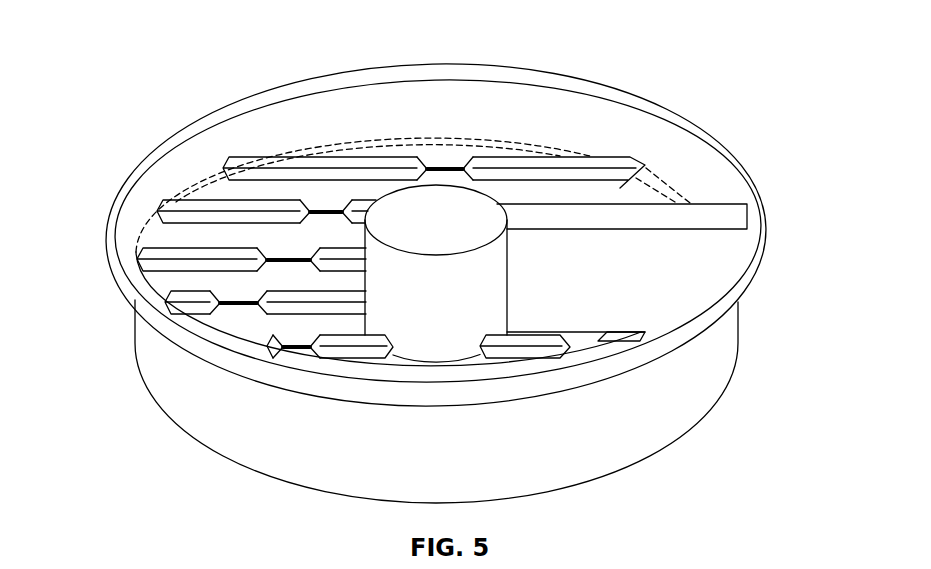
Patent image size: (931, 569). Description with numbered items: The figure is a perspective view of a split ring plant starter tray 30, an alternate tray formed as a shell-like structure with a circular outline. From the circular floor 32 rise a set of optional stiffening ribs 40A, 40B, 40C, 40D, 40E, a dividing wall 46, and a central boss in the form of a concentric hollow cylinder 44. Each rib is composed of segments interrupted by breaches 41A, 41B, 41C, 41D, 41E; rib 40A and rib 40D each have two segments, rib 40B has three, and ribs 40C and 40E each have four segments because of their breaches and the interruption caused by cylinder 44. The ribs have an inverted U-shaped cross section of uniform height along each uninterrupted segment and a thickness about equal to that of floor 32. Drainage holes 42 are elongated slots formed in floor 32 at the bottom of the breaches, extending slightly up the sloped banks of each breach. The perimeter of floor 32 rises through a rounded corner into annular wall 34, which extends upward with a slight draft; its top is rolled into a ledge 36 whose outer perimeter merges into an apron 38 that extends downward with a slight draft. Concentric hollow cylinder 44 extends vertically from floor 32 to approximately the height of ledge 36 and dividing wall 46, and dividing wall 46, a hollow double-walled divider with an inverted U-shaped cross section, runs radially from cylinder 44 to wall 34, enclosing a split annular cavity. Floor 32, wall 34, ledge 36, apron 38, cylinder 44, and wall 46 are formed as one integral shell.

The split ring plant starter tray 30 is at (148, 42).
The circular floor 32 is at (645, 166).
The annular wall 34 is at (723, 350).
The ledge 36 is at (612, 93).
The apron 38 is at (137, 298).
The stiffening rib 40A is at (360, 167).
The stiffening rib 40B is at (227, 203).
The stiffening rib 40C is at (163, 253).
The stiffening rib 40D is at (343, 298).
The stiffening rib 40E is at (363, 340).
The breach 41A is at (445, 150).
The breach 41B is at (328, 200).
The breach 41C is at (288, 251).
The breach 41D is at (236, 291).
The breach 41E is at (288, 330).
The drainage hole 42 is at (237, 308).
The concentric hollow cylinder 44 is at (490, 280).
The dividing wall 46 is at (727, 207).